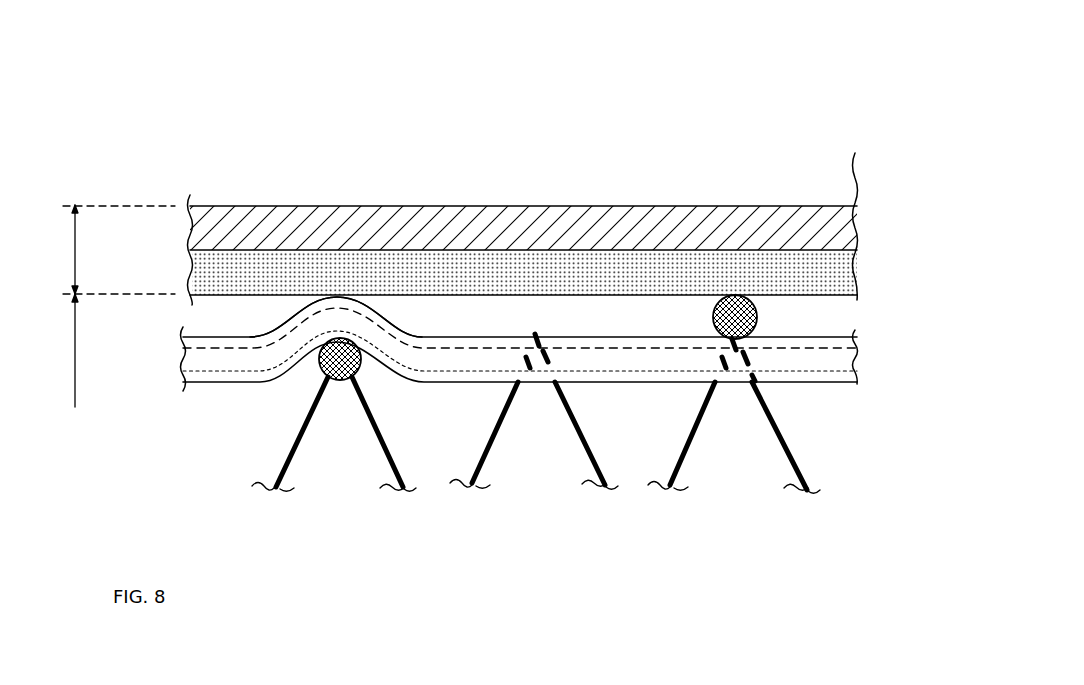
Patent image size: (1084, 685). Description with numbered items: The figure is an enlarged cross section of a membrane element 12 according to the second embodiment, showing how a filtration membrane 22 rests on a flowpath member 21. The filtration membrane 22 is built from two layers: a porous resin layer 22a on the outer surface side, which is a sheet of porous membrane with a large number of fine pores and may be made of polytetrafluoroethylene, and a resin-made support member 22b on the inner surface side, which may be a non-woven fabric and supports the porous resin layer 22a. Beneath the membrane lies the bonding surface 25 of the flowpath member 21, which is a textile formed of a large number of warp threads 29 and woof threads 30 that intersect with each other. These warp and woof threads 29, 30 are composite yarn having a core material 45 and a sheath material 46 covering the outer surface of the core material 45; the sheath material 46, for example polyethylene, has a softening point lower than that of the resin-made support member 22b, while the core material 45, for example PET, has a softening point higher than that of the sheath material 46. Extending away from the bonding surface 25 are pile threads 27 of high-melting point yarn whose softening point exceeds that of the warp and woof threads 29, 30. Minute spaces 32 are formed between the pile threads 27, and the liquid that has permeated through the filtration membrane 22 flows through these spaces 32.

The airbag cushion 12 is at (283, 118).
The flowpath member 21 is at (61, 350).
The filtration membrane 22 is at (109, 249).
The porous resin layer 22a is at (203, 236).
The resin-made support member 22b is at (210, 279).
The bonding surface 25 is at (384, 301).
The pile threads 27 is at (501, 437).
The warp threads 29 is at (306, 370).
The woof threads 30 is at (473, 325).
The minute spaces 32 is at (560, 415).
The core material 45 is at (338, 381).
The sheath material 46 is at (362, 357).